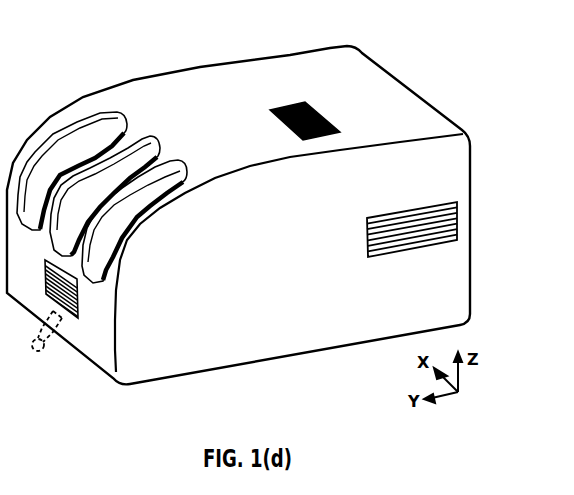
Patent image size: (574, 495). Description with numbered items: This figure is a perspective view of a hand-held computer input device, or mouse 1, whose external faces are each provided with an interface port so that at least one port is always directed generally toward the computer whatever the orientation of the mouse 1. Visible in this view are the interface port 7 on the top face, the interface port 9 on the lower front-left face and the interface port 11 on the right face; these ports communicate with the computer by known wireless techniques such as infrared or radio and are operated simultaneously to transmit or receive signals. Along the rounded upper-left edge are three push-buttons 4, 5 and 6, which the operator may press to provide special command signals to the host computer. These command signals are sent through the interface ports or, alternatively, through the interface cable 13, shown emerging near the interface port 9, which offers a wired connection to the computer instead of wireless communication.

The mouse 1 is at (438, 100).
The push-button 4 is at (119, 111).
The push-button 5 is at (146, 133).
The push-button 6 is at (176, 158).
The interface port 7 is at (293, 104).
The interface port 9 is at (50, 310).
The interface port 11 is at (367, 232).
The interface cable 13 is at (47, 346).